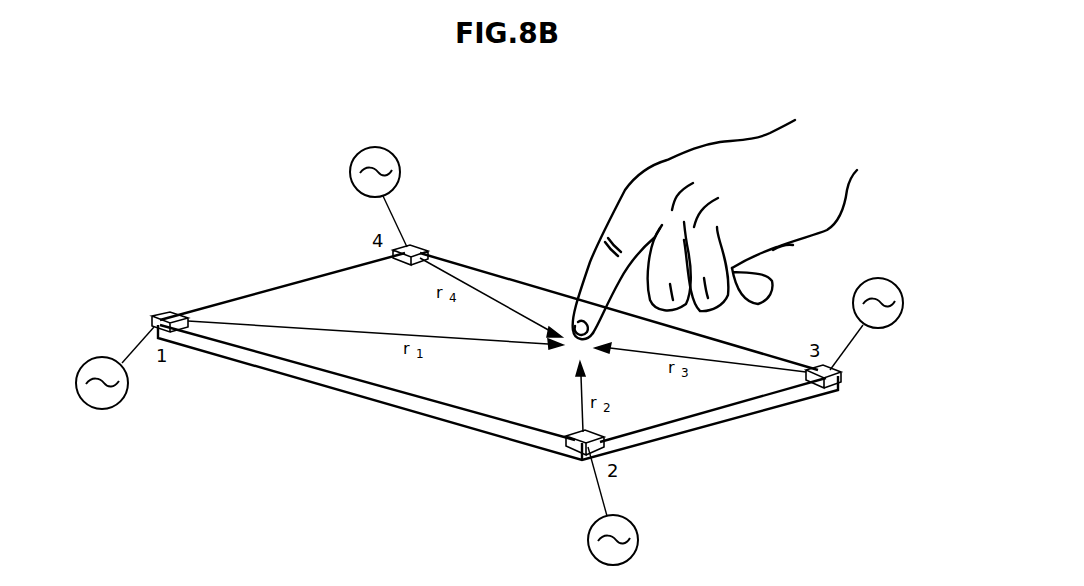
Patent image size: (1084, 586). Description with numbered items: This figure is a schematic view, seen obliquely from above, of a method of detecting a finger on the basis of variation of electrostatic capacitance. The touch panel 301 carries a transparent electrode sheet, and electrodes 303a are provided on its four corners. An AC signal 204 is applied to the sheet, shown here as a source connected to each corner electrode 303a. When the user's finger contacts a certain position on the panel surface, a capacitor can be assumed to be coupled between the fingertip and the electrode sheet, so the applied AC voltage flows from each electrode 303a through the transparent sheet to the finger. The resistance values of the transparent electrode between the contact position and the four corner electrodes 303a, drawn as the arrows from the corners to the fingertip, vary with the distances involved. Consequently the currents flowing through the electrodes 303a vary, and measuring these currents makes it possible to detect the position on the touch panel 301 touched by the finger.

The touch panel 301 is at (486, 396).
The electrodes 303a is at (164, 314).
The signal 204 is at (122, 404).